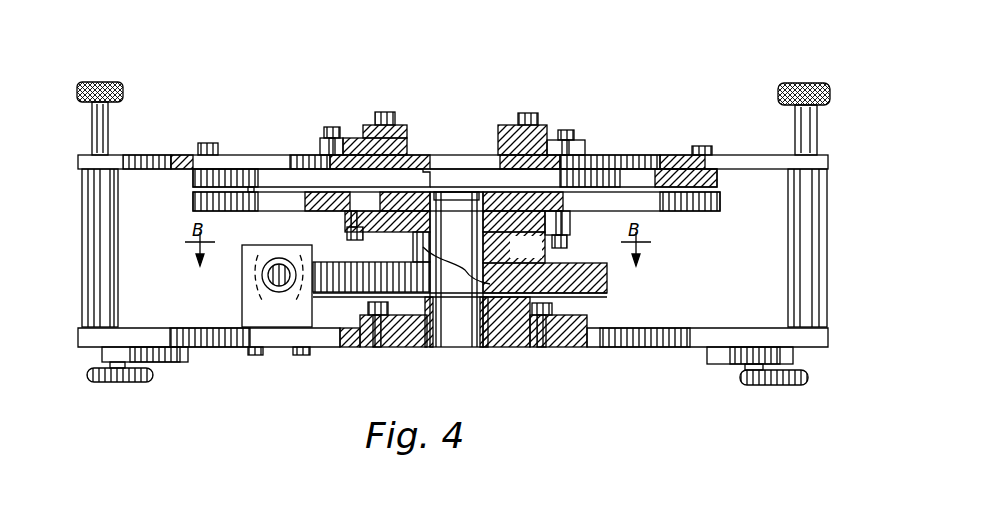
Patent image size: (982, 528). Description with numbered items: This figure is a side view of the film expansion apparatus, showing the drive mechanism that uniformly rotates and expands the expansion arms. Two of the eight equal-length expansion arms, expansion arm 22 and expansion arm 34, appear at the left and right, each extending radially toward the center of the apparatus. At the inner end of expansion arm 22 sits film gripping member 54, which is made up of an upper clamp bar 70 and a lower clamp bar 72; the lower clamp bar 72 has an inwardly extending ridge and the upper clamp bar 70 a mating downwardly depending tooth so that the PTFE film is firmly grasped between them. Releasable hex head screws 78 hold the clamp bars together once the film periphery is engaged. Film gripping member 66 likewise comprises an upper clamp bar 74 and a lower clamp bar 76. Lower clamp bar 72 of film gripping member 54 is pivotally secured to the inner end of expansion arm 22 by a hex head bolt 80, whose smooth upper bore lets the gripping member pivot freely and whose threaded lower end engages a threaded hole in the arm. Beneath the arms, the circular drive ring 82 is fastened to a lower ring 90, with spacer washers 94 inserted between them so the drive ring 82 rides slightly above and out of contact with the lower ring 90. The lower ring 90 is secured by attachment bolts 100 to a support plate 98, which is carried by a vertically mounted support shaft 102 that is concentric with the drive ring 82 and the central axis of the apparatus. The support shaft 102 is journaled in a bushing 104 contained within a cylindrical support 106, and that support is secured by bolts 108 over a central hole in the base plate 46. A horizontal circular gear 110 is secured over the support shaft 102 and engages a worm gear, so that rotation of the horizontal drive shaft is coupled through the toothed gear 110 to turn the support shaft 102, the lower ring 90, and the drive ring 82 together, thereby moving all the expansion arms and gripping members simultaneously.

The expansion arm 22 is at (145, 155).
The expansion arm 34 is at (738, 156).
The base plate 46 is at (645, 347).
The film gripping member 54 is at (407, 140).
The film gripping member 66 is at (503, 134).
The upper clamp bar 70 is at (358, 137).
The lower clamp bar 72 is at (345, 108).
The upper clamp bar 74 is at (548, 125).
The lower clamp bar 76 is at (588, 142).
The hex head screws 78 is at (384, 112).
The hex head bolt 80 is at (322, 138).
The drive ring 82 is at (193, 174).
The lower ring 90 is at (693, 212).
The spacer washer 94 is at (700, 187).
The support plate 98 is at (514, 247).
The attachment bolts 100 is at (348, 245).
The support shaft 102 is at (468, 347).
The bushing 104 is at (430, 347).
The cylindrical support 106 is at (510, 347).
The bolts 108 is at (553, 308).
The circular gear 110 is at (352, 292).